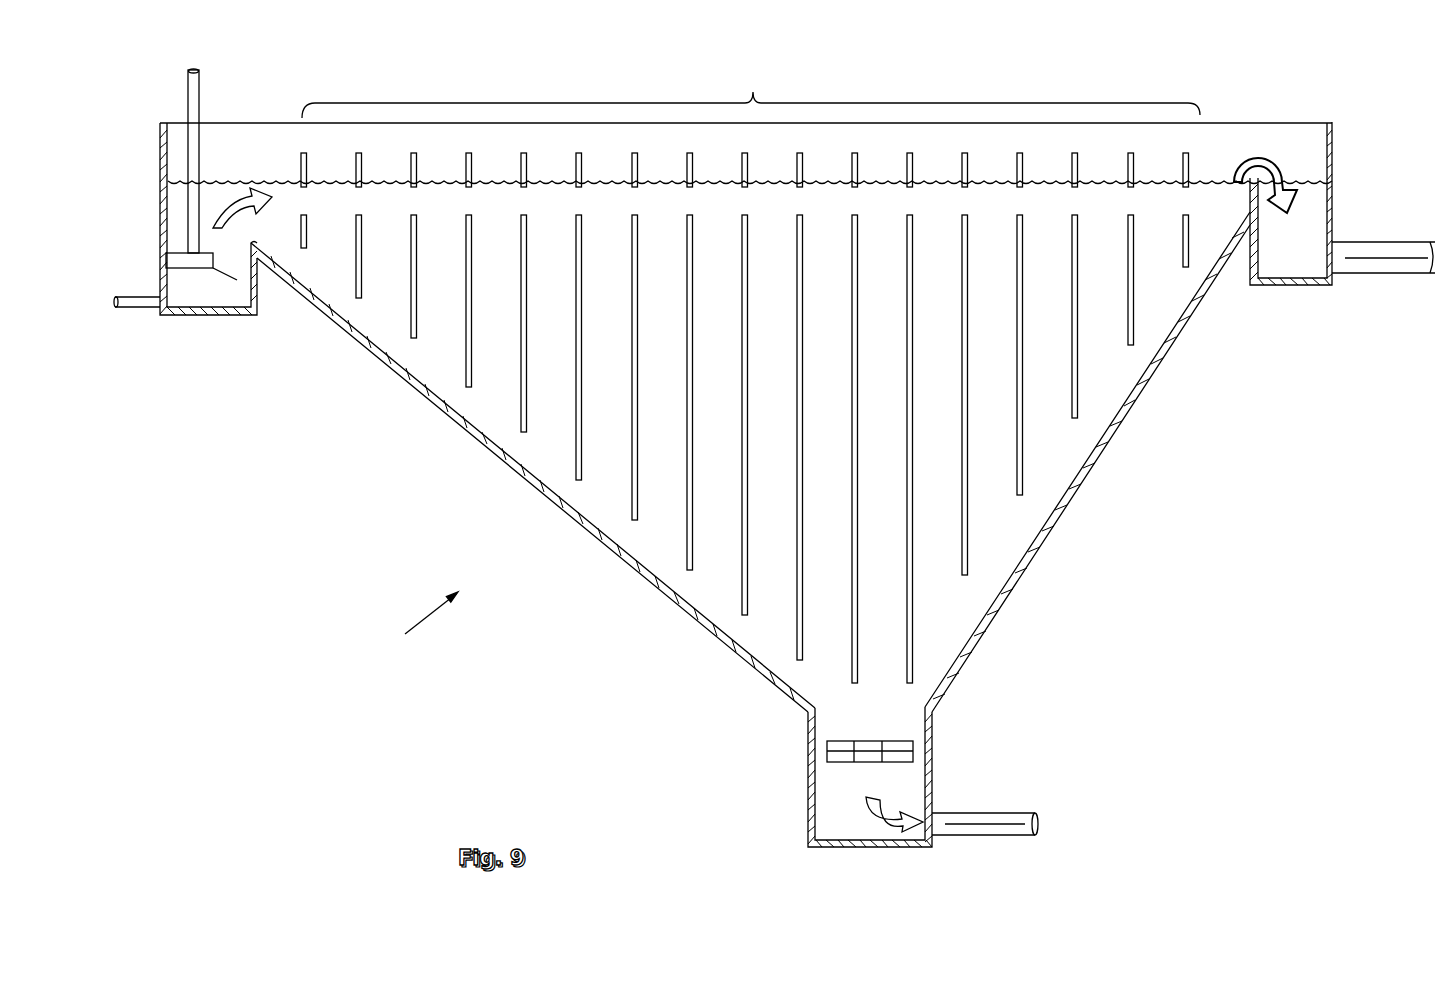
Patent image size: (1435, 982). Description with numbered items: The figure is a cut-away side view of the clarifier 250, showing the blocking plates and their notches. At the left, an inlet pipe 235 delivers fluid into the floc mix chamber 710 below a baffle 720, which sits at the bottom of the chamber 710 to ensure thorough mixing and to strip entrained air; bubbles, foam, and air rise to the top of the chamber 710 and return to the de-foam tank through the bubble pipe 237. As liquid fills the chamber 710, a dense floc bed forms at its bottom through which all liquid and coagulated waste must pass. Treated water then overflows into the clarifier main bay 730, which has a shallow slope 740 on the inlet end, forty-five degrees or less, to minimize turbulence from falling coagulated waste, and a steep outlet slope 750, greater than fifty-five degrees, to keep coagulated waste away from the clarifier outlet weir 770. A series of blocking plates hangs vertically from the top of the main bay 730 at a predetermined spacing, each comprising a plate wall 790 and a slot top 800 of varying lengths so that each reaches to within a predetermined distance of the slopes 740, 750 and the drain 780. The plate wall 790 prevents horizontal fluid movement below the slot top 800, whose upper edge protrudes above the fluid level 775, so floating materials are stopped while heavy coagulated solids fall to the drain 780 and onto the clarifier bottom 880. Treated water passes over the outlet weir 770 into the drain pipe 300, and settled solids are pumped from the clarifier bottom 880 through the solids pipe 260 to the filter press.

The bubble pipe 237 is at (200, 97).
The baffle 720 is at (180, 252).
The inlet pipe 235 is at (130, 307).
The floc mix chamber 710 is at (262, 290).
The shallow slope 740 is at (490, 443).
The steep outlet slope 750 is at (1097, 460).
The clarifier main bay 730 is at (751, 92).
The slot top 800 is at (356, 175).
The plate wall 790 is at (356, 231).
The fluid level 775 is at (1313, 178).
The clarifier outlet weir 770 is at (1295, 285).
The drain pipe 300 is at (1355, 242).
The drain 780 is at (913, 758).
The solids pipe 260 is at (1018, 813).
The clarifier bottom 880 is at (882, 848).
The clarifier 250 is at (410, 626).